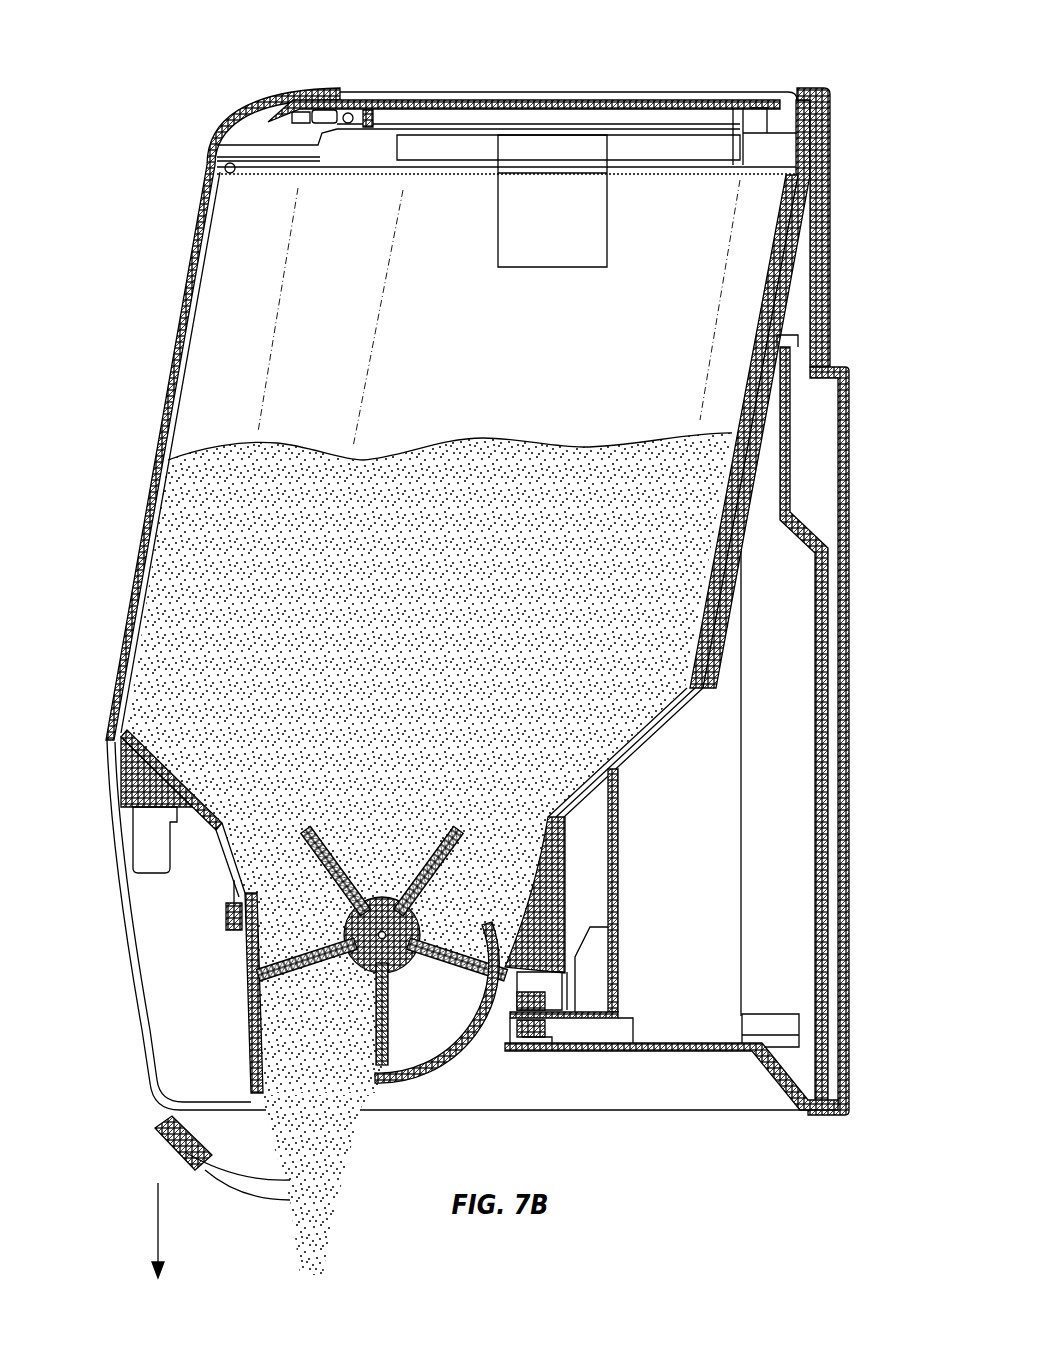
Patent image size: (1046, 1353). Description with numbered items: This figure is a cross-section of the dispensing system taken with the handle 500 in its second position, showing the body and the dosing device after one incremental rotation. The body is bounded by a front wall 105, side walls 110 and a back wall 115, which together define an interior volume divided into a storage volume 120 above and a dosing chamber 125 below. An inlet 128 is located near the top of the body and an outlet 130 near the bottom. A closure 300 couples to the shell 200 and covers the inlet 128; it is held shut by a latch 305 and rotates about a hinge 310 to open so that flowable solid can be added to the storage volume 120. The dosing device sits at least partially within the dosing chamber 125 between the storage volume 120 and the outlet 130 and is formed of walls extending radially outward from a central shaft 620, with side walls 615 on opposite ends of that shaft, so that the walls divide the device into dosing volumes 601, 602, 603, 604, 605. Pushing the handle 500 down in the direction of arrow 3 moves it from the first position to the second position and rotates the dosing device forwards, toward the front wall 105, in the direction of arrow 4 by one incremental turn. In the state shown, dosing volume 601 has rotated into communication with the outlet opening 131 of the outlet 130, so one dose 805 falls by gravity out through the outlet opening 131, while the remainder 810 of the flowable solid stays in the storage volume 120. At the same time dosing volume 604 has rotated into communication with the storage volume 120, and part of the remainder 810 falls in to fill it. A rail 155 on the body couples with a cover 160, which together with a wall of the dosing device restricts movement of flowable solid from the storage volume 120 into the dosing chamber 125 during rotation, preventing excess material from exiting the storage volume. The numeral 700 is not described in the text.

The arrow 3 is at (150, 1225).
The arrow 4 is at (406, 942).
The front wall 105 is at (192, 335).
The side walls 110 is at (456, 342).
The back wall 115 is at (768, 307).
The storage volume 120 is at (228, 282).
The dosing chamber 125 is at (265, 842).
The inlet 128 is at (447, 172).
The outlet 130 is at (250, 1085).
The outlet opening 131 is at (297, 1113).
The rail 155 is at (240, 905).
The cover 160 is at (240, 865).
The shell 200 is at (872, 464).
The closure 300 is at (518, 78).
The latch 305 is at (292, 110).
The hinge 310 is at (805, 95).
The handle 500 is at (183, 1147).
The dosing volume 601 is at (297, 1022).
The dosing volume 602 is at (277, 922).
The dosing volume 603 is at (361, 864).
The dosing volume 604 is at (439, 926).
The dosing volume 605 is at (416, 1029).
The side walls 615 is at (447, 837).
The central shaft 620 is at (372, 952).
The rotor housing liner 700 is at (418, 1084).
The dose 805 is at (305, 1220).
The remainder 810 is at (425, 617).